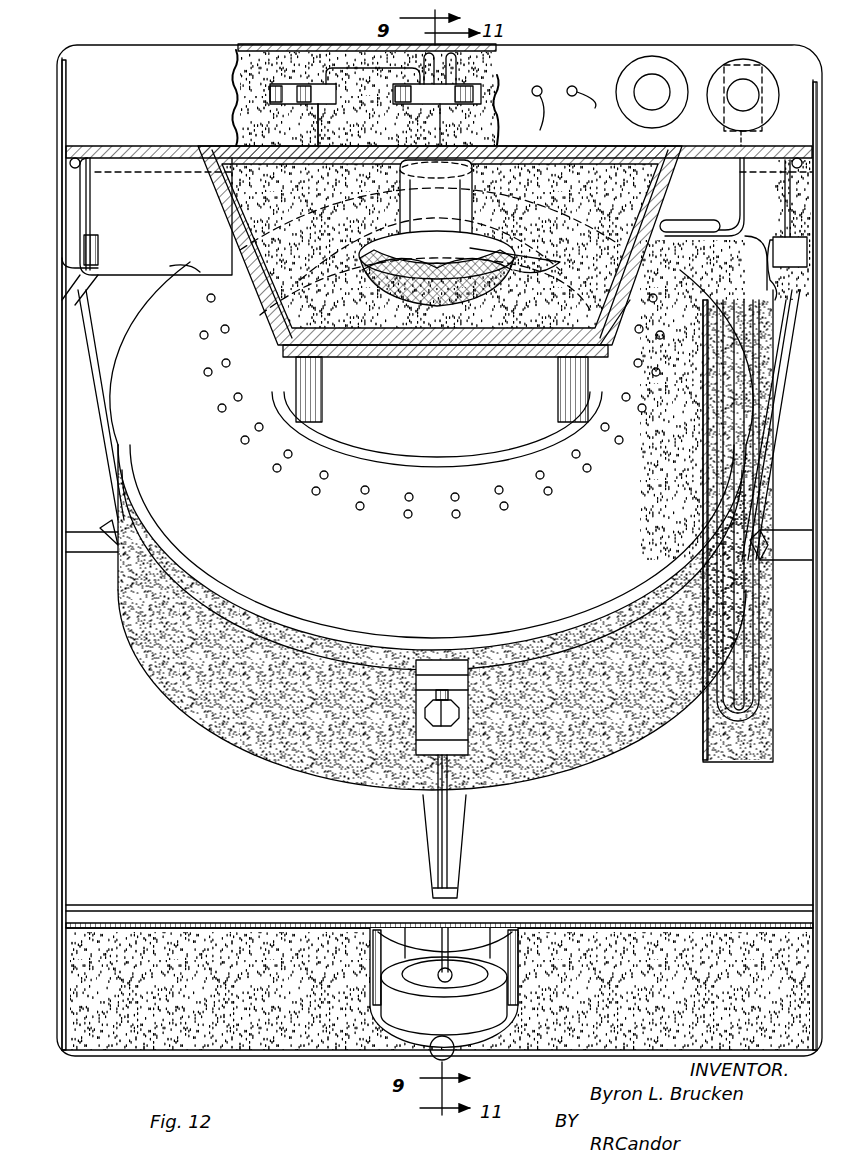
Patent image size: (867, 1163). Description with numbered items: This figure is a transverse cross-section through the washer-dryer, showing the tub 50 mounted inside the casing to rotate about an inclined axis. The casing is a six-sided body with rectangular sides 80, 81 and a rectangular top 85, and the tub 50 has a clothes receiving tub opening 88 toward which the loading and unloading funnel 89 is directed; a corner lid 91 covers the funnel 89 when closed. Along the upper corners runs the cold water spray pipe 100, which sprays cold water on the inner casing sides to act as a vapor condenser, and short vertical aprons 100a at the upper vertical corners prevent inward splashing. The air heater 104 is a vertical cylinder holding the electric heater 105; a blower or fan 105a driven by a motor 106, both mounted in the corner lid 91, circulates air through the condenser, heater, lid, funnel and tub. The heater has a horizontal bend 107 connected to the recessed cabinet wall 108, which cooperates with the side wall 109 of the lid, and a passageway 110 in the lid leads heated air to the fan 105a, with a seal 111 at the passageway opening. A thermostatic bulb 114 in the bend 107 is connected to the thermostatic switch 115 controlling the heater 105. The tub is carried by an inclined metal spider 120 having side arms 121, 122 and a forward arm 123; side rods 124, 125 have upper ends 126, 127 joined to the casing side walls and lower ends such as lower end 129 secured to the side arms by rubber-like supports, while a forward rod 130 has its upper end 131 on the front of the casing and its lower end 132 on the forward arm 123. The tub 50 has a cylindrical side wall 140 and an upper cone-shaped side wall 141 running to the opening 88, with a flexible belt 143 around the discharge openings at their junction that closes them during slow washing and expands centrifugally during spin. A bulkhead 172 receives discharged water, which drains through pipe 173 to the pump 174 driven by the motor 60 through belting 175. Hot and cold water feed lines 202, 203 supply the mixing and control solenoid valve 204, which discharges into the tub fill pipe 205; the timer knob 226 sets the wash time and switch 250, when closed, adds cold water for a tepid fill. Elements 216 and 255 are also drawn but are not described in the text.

The tub 50 is at (190, 275).
The motor 60 is at (518, 950).
The rectangular side 80 is at (64, 650).
The rectangular side 81 is at (820, 812).
The rectangular top 85 is at (170, 146).
The tub opening 88 is at (468, 465).
The loading and unloading funnel 89 is at (400, 406).
The corner lid 91 is at (278, 298).
The cold water spray pipe 100 is at (77, 158).
The vertical aprons 100a is at (92, 208).
The air heater 104 is at (703, 740).
The electric heater 105 is at (755, 684).
The blower or fan 105a is at (385, 288).
The motor 106 is at (408, 185).
The horizontal bend 107 is at (670, 212).
The recessed cabinet wall 108 is at (680, 192).
The side wall 109 is at (668, 162).
The passageway 110 is at (545, 280).
The seal 111 is at (612, 290).
The thermostatic bulb 114 is at (712, 220).
The thermostatic switch 115 is at (752, 80).
The inclined metal spider 120 is at (516, 822).
The side arm 121 is at (772, 532).
The side arm 122 is at (112, 550).
The forward arm 123 is at (460, 845).
The side rod 124 is at (80, 368).
The side rod 125 is at (780, 400).
The upper end 126 is at (760, 280).
The upper end 127 is at (78, 298).
The lower end 129 is at (100, 530).
The forward rod 130 is at (436, 832).
The upper end 131 is at (465, 724).
The lower end 132 is at (455, 890).
The cylindrical side wall 140 is at (305, 770).
The cone-shaped side wall 141 is at (355, 500).
The flexible belt 143 is at (575, 632).
The bulkhead 172 is at (95, 918).
The pipe 173 is at (470, 960).
The pump 174 is at (455, 1018).
The belting 175 is at (420, 948).
The hot water feed line 202 is at (452, 68).
The cold water feed line 203 is at (403, 86).
The mixing and control solenoid valve 204 is at (455, 104).
The tub fill pipe 205 is at (442, 130).
The valve 216 is at (305, 90).
The knob 226 is at (618, 92).
The switch 250 is at (583, 102).
The indicator 255 is at (557, 118).